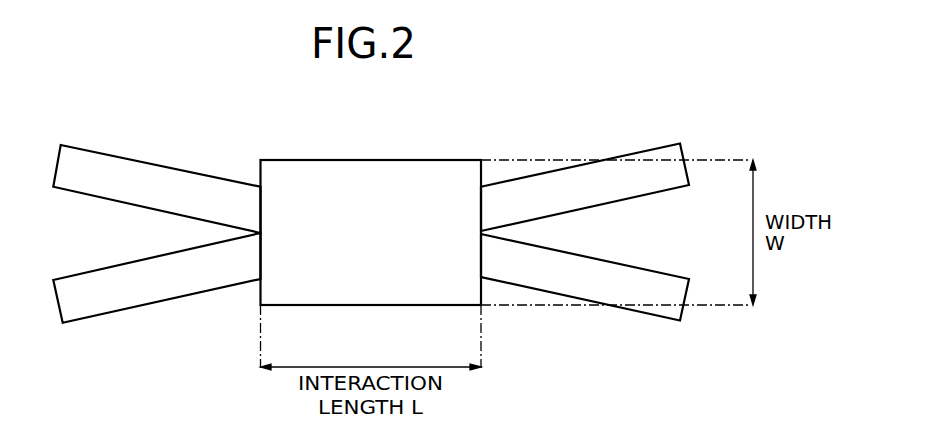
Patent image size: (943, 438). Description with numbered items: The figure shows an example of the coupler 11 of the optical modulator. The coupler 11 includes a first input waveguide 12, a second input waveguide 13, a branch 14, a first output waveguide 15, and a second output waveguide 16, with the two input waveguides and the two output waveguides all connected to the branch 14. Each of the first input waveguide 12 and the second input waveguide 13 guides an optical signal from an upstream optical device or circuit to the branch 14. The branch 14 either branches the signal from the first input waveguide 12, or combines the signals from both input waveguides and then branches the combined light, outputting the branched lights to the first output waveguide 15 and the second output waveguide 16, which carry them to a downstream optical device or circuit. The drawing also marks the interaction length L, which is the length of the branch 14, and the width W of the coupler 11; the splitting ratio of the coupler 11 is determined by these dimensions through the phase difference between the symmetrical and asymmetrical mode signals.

The coupler 11 is at (450, 114).
The first input waveguide 12 is at (101, 147).
The second input waveguide 13 is at (88, 318).
The branch 14 is at (307, 160).
The first output waveguide 15 is at (646, 152).
The second output waveguide 16 is at (653, 315).